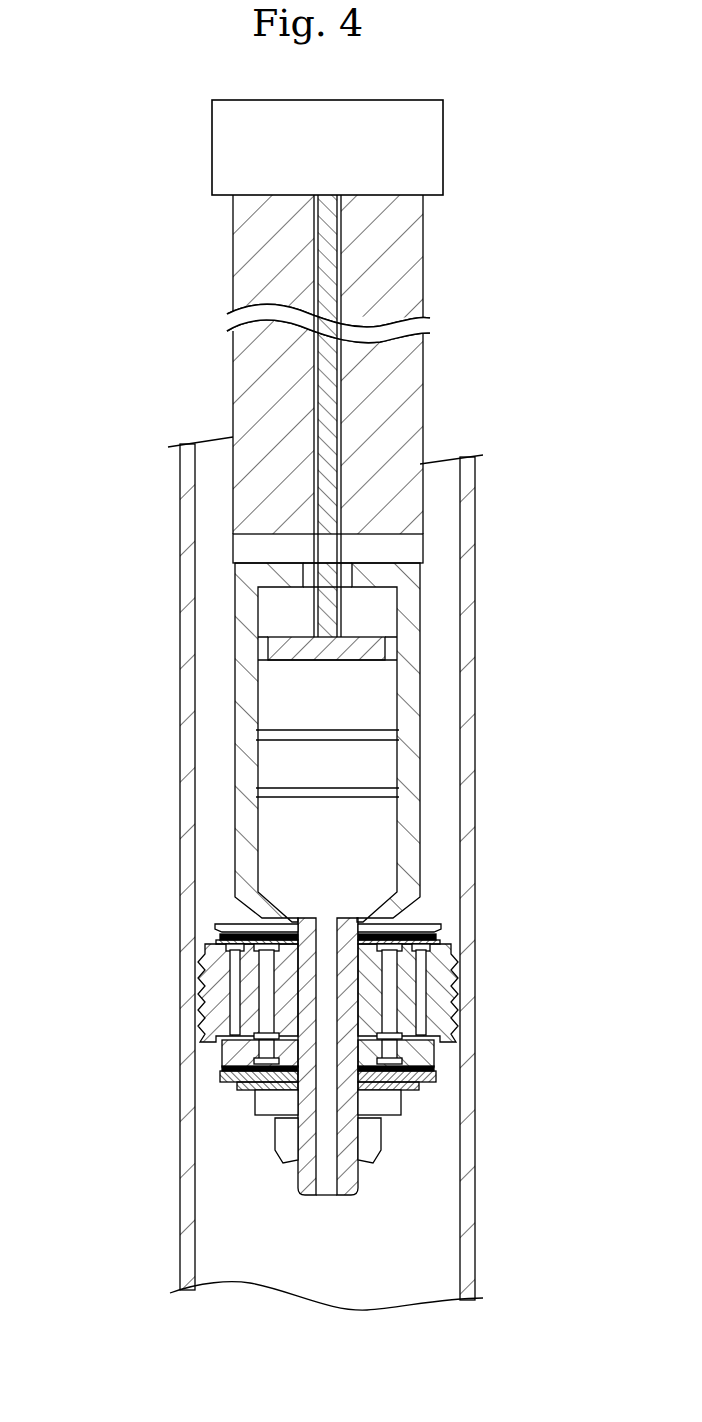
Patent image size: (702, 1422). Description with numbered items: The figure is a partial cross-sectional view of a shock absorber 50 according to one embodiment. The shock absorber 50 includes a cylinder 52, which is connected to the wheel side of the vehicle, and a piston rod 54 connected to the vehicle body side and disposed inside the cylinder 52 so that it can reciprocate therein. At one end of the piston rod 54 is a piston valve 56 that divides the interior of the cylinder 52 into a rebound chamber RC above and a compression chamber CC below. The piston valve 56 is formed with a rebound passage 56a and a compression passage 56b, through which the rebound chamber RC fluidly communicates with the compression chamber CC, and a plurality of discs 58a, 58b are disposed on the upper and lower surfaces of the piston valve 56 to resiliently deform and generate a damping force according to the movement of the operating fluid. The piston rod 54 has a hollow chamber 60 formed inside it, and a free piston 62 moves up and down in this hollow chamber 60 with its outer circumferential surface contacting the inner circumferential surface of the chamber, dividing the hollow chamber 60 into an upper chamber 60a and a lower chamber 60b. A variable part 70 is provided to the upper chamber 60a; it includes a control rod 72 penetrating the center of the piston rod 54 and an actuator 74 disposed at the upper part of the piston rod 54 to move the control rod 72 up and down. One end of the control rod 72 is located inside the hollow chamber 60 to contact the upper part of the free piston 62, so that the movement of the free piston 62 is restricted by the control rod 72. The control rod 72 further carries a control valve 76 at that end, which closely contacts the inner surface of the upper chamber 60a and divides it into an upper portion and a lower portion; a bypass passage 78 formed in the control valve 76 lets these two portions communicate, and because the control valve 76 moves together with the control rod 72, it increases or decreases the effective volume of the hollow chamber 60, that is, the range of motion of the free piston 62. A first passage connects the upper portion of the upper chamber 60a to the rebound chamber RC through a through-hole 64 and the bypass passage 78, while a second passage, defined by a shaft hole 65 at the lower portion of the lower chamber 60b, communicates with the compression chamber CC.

The shock absorber 50 is at (507, 401).
The cylinder 52 is at (468, 541).
The piston rod 54 is at (430, 663).
The piston valve 56 is at (453, 956).
The rebound passage 56a is at (395, 1011).
The compression passage 56b is at (422, 983).
The disc 58a is at (430, 926).
The disc 58b is at (424, 1085).
The hollow chamber 60 is at (88, 702).
The upper chamber 60a is at (279, 700).
The lower chamber 60b is at (279, 826).
The free piston 62 is at (384, 763).
The through-hole 64 is at (386, 543).
The shaft hole 65 is at (336, 1158).
The variable part 70 is at (462, 198).
The control rod 72 is at (320, 372).
The actuator 74 is at (214, 150).
The control valve 76 is at (294, 626).
The bypass passage 78 is at (384, 637).
The rebound chamber RC is at (207, 553).
The compression chamber CC is at (226, 1202).